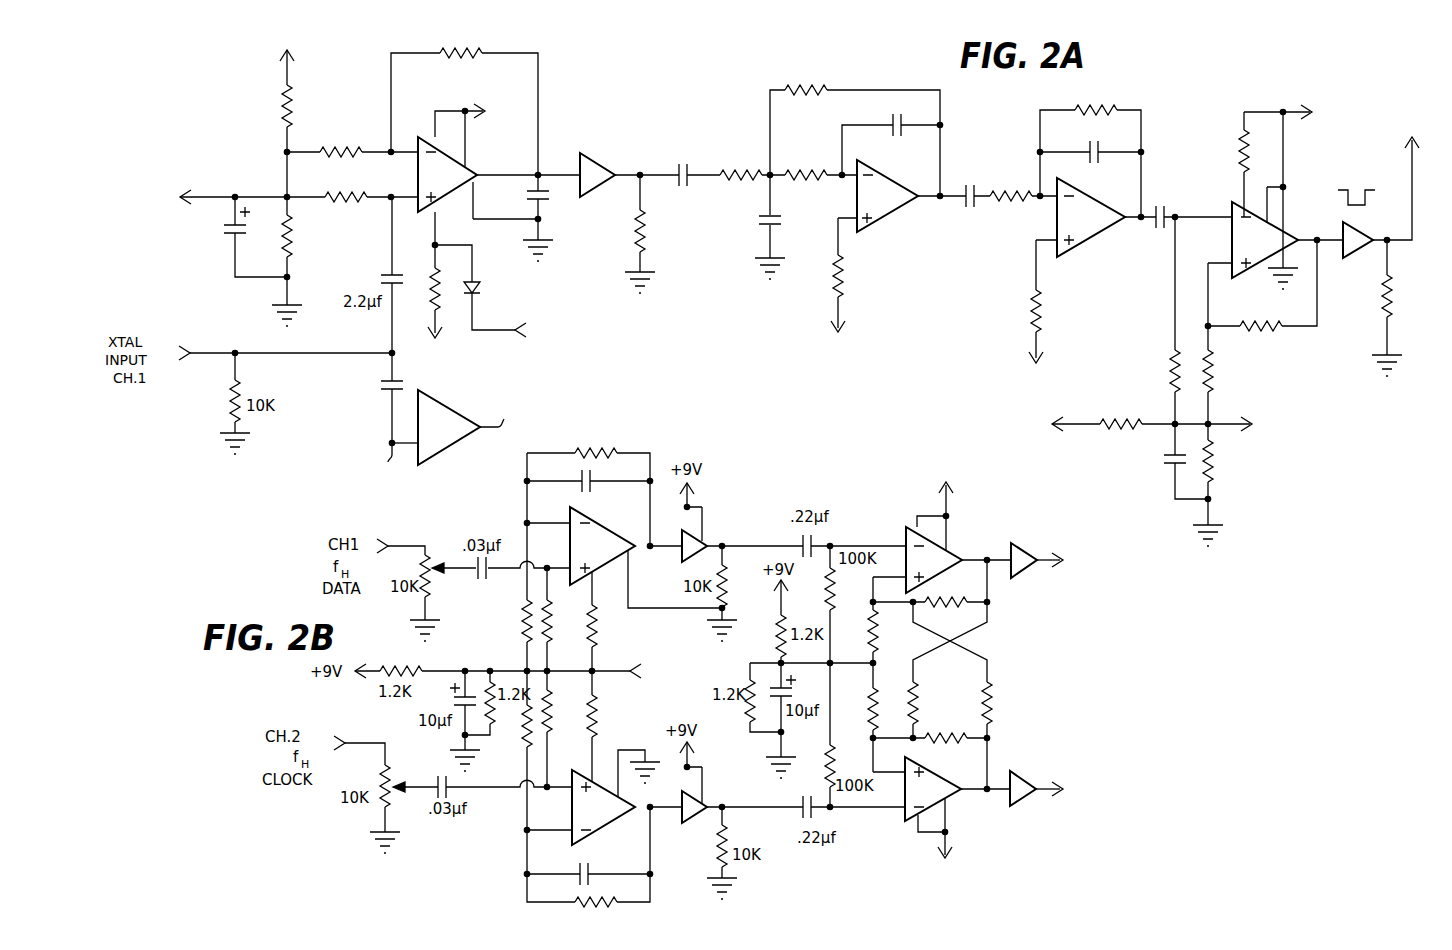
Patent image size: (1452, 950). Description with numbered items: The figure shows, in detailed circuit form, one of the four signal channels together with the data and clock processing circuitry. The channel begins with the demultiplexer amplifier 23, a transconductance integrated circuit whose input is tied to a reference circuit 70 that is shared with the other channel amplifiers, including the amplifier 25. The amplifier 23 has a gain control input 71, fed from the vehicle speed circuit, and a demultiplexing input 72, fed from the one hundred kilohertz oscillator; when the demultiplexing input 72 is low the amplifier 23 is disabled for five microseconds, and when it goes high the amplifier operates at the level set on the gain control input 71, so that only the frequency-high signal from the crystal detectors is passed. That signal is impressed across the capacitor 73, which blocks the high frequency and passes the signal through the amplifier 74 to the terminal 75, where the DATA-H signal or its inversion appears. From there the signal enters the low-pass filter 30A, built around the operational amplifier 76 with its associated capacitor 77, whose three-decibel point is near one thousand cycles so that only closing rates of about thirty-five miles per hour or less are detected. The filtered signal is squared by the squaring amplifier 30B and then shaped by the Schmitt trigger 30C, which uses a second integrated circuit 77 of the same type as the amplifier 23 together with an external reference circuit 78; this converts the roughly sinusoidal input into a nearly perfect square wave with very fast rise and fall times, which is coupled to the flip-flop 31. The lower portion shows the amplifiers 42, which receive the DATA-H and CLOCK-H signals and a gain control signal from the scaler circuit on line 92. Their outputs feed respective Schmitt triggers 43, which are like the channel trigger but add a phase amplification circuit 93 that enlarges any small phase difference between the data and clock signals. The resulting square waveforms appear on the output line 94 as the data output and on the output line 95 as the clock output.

In FIG. 2A, the reference circuit 70 is at (252, 176).
In FIG. 2A, the demultiplexer amplifier 23 is at (448, 186).
In FIG. 2A, the capacitor 73 is at (533, 197).
In FIG. 2A, the amplifier 74 is at (602, 153).
In FIG. 2A, the terminal 75 is at (641, 170).
In FIG. 2A, the demultiplexing input 72 is at (490, 330).
In FIG. 2A, the gain control input 71 is at (442, 336).
In FIG. 2A, the amplifier 25 is at (450, 438).
In FIG. 2A, the capacitor / integrated circuit 77 is at (892, 122).
In FIG. 2A, the operational amplifier 76 is at (878, 203).
In FIG. 2A, the low-pass filter 30A is at (832, 214).
In FIG. 2A, the squaring amplifier 30B is at (1135, 261).
In FIG. 2A, the Schmitt trigger 30C is at (1342, 164).
In FIG. 2A, the flip-flop 31 is at (1403, 90).
In FIG. 2A, the external reference circuit 78 is at (1148, 402).
In FIG. 2B, the amplifiers 42 is at (594, 556).
In FIG. 2B, the line 92 is at (629, 676).
In FIG. 2B, the Schmitt triggers 43 is at (928, 572).
In FIG. 2B, the phase amplification circuit 93 is at (962, 678).
In FIG. 2B, the output line 94 is at (1040, 556).
In FIG. 2B, the output line 95 is at (1037, 787).